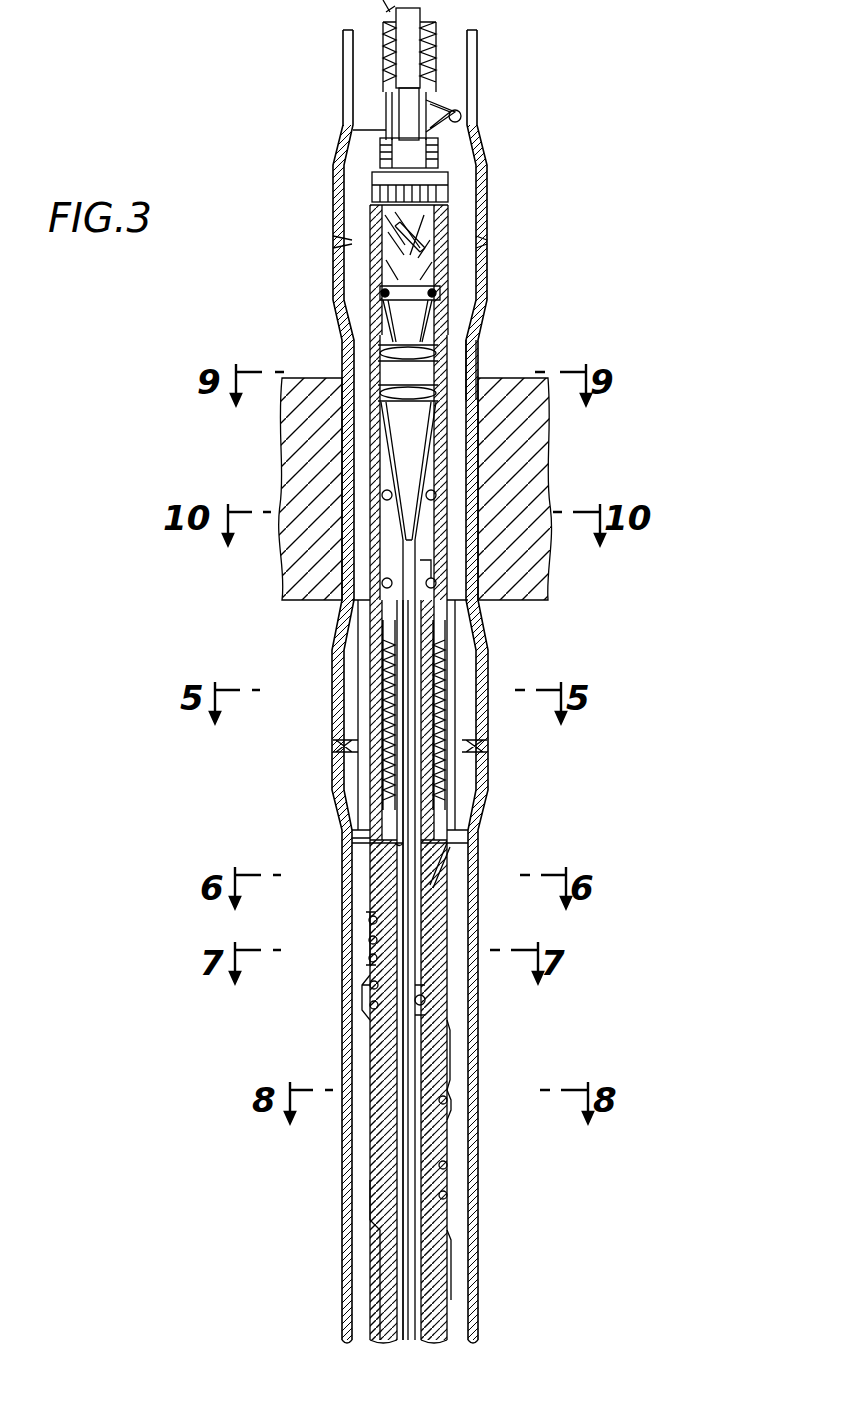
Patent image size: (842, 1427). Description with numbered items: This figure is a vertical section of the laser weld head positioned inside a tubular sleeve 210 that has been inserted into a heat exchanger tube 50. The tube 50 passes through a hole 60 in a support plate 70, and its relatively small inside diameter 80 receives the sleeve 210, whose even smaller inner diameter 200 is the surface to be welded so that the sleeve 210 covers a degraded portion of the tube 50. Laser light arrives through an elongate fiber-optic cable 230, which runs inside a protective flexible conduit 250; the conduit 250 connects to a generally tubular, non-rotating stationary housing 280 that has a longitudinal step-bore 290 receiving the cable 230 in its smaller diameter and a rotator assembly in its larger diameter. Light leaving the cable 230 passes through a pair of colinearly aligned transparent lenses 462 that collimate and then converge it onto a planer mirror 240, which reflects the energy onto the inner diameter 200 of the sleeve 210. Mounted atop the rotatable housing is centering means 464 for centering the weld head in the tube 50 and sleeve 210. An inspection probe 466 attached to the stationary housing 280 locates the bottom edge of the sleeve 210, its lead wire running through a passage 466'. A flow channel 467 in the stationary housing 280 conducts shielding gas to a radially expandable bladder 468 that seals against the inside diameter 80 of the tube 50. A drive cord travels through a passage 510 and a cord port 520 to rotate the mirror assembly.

The tube 50 is at (470, 40).
The hole 60 is at (470, 383).
The support plate 70 is at (553, 445).
The inside diameter 80 is at (462, 96).
The inner diameter 200 is at (455, 154).
The tubular sleeve 210 is at (460, 186).
The fiber-optic cable 230 is at (410, 1213).
The planer mirror 240 is at (388, 232).
The flexible conduit 250 is at (376, 1284).
The stationary housing 280 is at (385, 891).
The step-bore 290 is at (395, 848).
The transparent lenses 462 is at (385, 392).
The centering means 464 is at (318, 121).
The inspection probe 466 is at (333, 938).
The passage 466' is at (334, 993).
The flow channel 467 is at (435, 1100).
The radially expandable bladder 468 is at (448, 1063).
The passage 510 is at (430, 998).
The cord port 520 is at (440, 843).